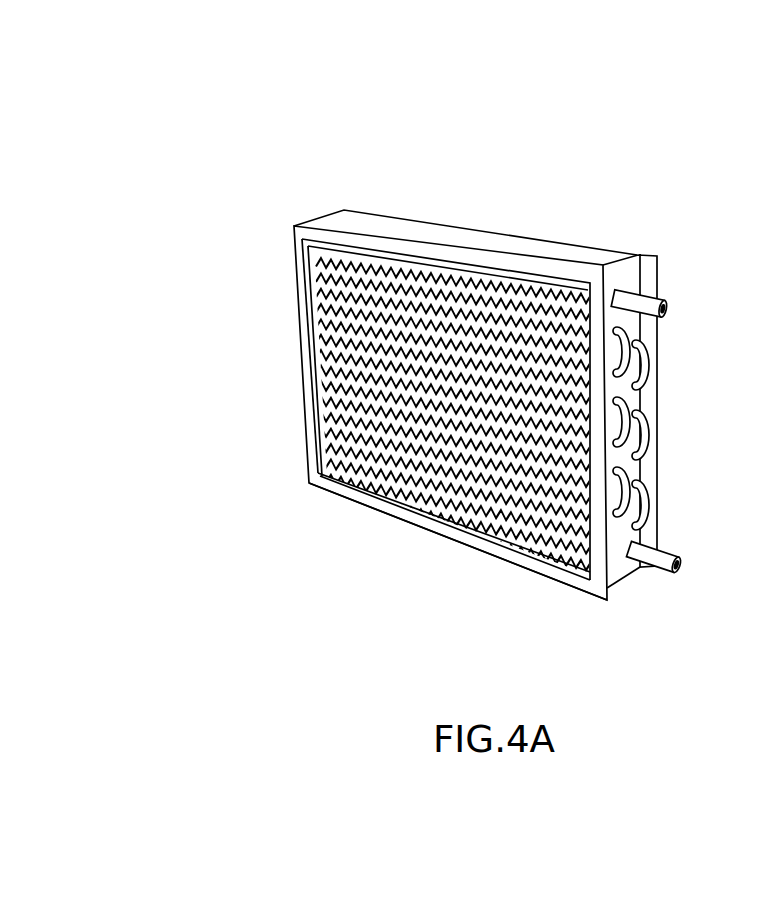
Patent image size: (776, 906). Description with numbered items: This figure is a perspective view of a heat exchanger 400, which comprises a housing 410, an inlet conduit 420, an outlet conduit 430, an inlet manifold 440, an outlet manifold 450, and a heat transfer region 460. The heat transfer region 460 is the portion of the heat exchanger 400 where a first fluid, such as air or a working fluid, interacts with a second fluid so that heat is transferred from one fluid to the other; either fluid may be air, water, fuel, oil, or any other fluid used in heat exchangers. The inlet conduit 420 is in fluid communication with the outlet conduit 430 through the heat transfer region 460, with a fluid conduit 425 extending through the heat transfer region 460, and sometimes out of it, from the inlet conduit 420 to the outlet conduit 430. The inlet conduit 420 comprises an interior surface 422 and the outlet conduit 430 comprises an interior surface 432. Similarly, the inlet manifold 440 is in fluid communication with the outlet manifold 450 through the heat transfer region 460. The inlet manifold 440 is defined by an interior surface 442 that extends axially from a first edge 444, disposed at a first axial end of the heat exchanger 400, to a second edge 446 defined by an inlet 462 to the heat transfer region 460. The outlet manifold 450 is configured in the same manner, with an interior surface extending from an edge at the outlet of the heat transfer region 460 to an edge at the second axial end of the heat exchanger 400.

The heat exchanger 400 is at (218, 178).
The housing 410 is at (490, 242).
The inlet conduit 420 is at (638, 300).
The interior surface 422 is at (667, 308).
The fluid conduit 425 is at (650, 362).
The outlet conduit 430 is at (653, 557).
The interior surface 432 is at (680, 563).
The inlet manifold 440 is at (315, 380).
The interior surface 442 is at (320, 463).
The first edge 444 is at (398, 501).
The second edge 446 is at (466, 533).
The outlet manifold 450 is at (677, 460).
The heat transfer region 460 is at (333, 330).
The inlet 462 is at (333, 286).